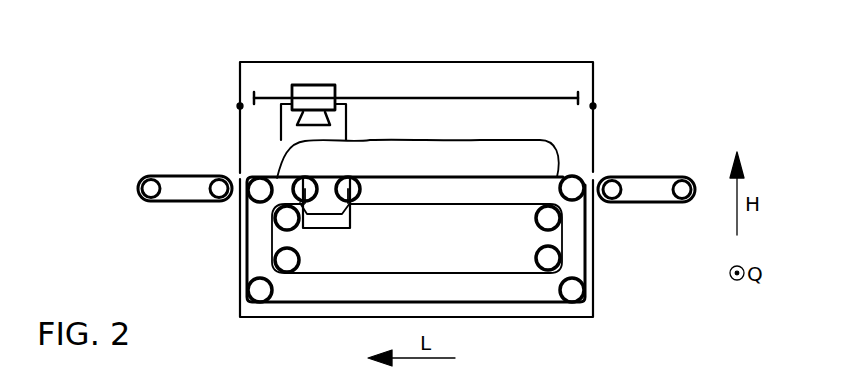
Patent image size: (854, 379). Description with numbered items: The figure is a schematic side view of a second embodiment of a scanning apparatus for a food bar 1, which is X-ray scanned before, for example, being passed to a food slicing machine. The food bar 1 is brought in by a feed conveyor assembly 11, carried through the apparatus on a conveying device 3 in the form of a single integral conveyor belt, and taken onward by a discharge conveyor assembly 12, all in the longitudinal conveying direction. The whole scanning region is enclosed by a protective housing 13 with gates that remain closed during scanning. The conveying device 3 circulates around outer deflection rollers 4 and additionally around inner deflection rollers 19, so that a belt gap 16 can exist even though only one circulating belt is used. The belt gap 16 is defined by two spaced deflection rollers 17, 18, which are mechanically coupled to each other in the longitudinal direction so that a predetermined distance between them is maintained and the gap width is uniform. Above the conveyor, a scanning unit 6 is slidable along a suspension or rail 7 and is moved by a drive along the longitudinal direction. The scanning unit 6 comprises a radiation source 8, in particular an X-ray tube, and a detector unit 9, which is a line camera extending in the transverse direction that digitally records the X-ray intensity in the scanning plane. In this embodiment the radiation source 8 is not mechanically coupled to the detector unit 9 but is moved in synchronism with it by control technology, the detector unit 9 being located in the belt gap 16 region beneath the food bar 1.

The food bar 1 is at (488, 140).
The conveying device 3 is at (590, 250).
The deflection rollers 4 is at (257, 201).
The scanning unit 6 is at (300, 76).
The rail 7 is at (405, 97).
The radiation source 8 is at (322, 84).
The detector unit 9 is at (332, 222).
The feed conveyor assembly 11 is at (664, 162).
The discharge conveyor assembly 12 is at (158, 162).
The protective housing 13 is at (562, 61).
The belt gap 16 is at (341, 168).
The deflection roller 17 is at (282, 167).
The deflection roller 18 is at (362, 205).
The inner deflection rollers 19 is at (276, 226).